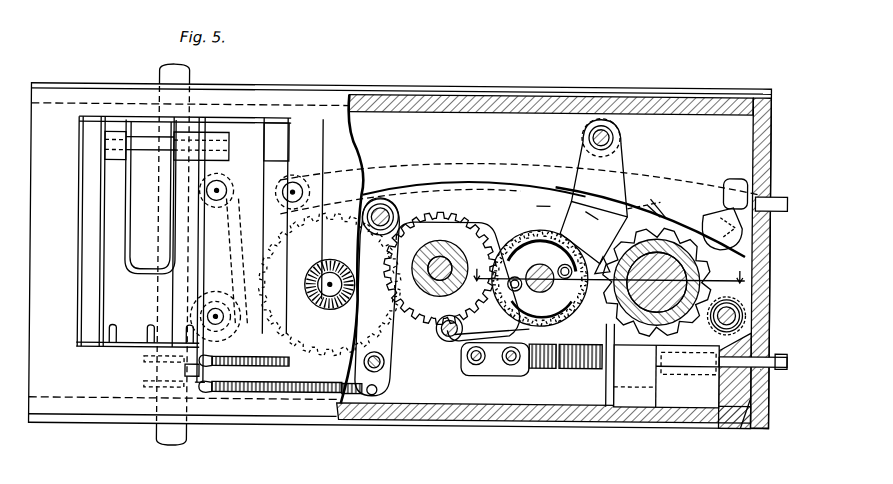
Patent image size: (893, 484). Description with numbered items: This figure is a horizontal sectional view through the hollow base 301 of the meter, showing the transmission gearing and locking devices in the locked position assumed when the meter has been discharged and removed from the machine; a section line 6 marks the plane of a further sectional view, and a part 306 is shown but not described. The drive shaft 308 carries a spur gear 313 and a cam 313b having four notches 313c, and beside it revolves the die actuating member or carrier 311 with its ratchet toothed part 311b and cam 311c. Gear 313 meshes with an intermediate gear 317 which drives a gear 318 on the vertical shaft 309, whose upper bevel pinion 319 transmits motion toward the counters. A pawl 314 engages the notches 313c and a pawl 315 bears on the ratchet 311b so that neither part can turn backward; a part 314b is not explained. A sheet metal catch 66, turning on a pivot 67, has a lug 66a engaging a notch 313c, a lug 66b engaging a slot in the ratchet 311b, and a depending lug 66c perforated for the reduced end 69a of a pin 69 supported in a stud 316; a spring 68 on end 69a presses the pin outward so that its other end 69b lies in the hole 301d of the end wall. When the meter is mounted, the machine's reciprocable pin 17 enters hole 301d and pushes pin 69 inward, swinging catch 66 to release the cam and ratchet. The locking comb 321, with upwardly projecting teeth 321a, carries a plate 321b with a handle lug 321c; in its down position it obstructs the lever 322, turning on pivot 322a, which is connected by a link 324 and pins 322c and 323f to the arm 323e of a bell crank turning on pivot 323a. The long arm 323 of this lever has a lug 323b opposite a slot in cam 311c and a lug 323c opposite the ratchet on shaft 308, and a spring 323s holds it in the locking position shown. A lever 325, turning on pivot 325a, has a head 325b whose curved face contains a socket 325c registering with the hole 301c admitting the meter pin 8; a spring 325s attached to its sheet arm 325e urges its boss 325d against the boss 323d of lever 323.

The section line 6- 6 is at (608, 267).
The meter pin 8 is at (781, 209).
The reciprocable pin 17 is at (781, 365).
The catch 66 is at (534, 196).
The lug 66a is at (510, 228).
The lug 66b is at (615, 291).
The depending lug 66c is at (608, 406).
The pivot 67 is at (600, 124).
The spring 68 is at (537, 368).
The pin 69 is at (672, 366).
The reduced end of pin 69a is at (565, 368).
The right hand end of pin 69b is at (734, 362).
The hollow base 301 is at (740, 397).
The hole 301c is at (760, 91).
The hole 301d is at (753, 398).
The guide rod 306 is at (165, 432).
The drive shaft 308 is at (533, 246).
The vertical shaft 309 is at (300, 270).
The die actuating member 311 is at (666, 406).
The ratchet toothed part 311b is at (645, 346).
The cam 311c is at (688, 363).
The spur gear 313 is at (560, 168).
The cam 313b is at (586, 211).
The notches 313c is at (525, 344).
The pawl 314 is at (453, 340).
The screw 314b is at (557, 374).
The pawl 315 is at (716, 243).
The stud 316 is at (492, 366).
The intermediate gear 317 is at (436, 211).
The gear 318 is at (336, 242).
The bevel pinion 319 is at (287, 263).
The locking comb 321 is at (177, 250).
The teeth 321a is at (112, 330).
The plate 321b is at (200, 235).
The lug 321c is at (186, 372).
The lever 322 is at (213, 273).
The pivot 322a is at (216, 190).
The pin 322c is at (215, 319).
The bell crank lever arm 323 is at (472, 202).
The pivot 323a is at (372, 205).
The lug 323b is at (647, 203).
The lug 323c is at (543, 202).
The boss 323d is at (625, 207).
The arm 323e is at (380, 335).
The pin 323f is at (380, 364).
The spring 323s is at (270, 394).
The link 324 is at (352, 372).
The lever 325 is at (423, 167).
The pivot 325a is at (292, 192).
The head 325b is at (750, 182).
The socket 325c is at (735, 206).
The boss 325d is at (650, 196).
The sheet arm 325e is at (270, 208).
The spring 325s is at (235, 369).